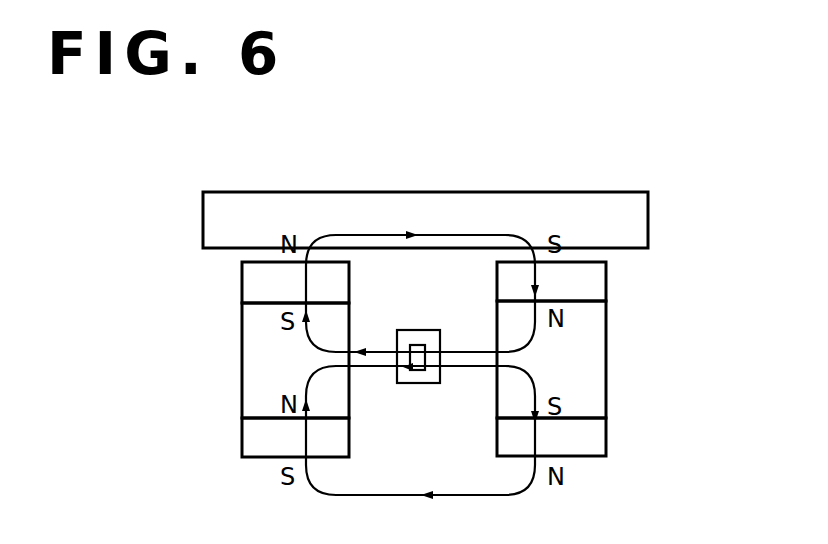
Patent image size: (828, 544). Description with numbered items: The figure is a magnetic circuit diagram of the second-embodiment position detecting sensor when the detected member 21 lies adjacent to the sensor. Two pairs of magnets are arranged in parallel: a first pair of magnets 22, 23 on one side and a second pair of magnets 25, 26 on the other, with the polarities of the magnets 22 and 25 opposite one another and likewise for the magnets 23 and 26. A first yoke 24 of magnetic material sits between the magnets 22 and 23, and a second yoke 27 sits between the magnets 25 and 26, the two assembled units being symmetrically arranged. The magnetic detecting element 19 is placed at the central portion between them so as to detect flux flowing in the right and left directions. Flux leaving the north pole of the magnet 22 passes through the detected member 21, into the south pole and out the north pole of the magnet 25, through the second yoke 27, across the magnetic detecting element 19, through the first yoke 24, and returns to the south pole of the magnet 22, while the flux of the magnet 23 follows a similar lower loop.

The magnetic detecting element 19 is at (417, 383).
The detected member 21 is at (550, 212).
The magnet 22 is at (252, 282).
The magnet 23 is at (258, 444).
The first yoke 24 is at (258, 340).
The magnet 25 is at (585, 283).
The magnet 26 is at (590, 433).
The second yoke 27 is at (575, 338).